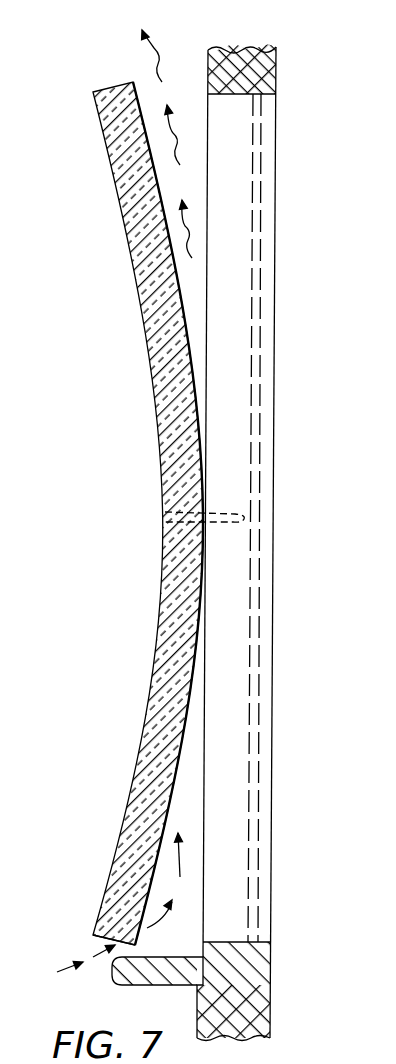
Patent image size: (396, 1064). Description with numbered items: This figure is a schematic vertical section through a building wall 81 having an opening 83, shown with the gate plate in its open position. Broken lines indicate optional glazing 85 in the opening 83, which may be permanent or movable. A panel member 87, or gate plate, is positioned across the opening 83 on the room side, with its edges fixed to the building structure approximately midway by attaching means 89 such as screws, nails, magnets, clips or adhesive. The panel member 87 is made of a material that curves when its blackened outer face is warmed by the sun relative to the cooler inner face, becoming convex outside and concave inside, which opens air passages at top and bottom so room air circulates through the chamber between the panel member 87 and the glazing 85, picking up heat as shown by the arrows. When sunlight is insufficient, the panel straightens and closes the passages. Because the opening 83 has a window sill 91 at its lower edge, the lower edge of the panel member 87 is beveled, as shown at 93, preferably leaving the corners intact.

The building wall 81 is at (271, 985).
The opening 83 is at (277, 99).
The glazing 85 is at (261, 203).
The panel member 87 is at (150, 349).
The attaching means 89 is at (240, 513).
The window sill 91 is at (120, 983).
The beveled lower edge 93 is at (107, 924).